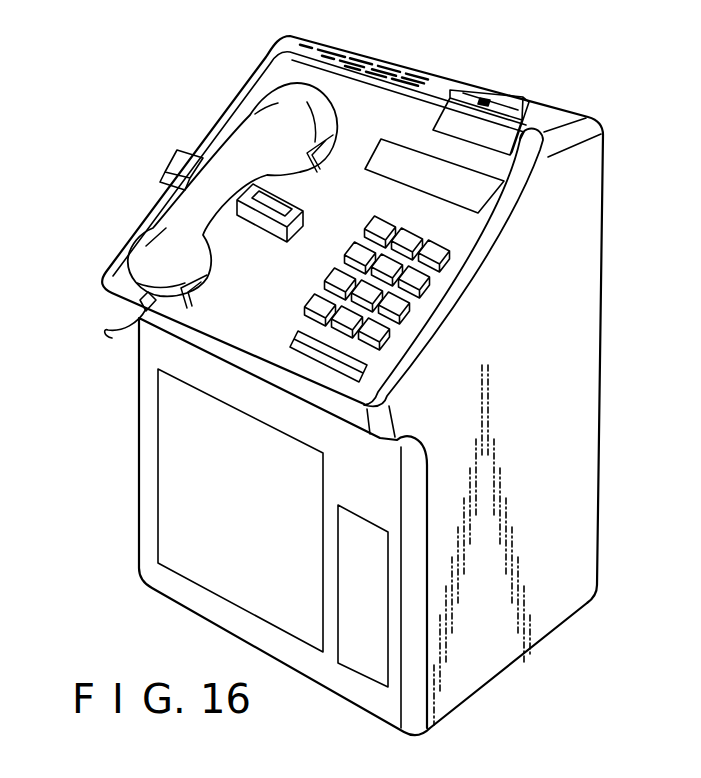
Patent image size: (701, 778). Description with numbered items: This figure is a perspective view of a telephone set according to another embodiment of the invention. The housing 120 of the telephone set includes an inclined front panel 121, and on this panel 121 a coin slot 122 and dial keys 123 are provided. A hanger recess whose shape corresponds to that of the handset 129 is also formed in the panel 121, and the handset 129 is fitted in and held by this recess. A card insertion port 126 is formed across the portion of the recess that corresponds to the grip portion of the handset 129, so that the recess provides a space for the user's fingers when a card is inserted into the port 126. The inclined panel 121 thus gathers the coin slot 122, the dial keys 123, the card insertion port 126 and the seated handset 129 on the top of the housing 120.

The housing 120 is at (602, 343).
The inclined front panel 121 is at (407, 106).
The coin slot 122 is at (528, 100).
The dial keys 123 is at (425, 289).
The card insertion port 126 is at (183, 162).
The handset 129 is at (252, 132).